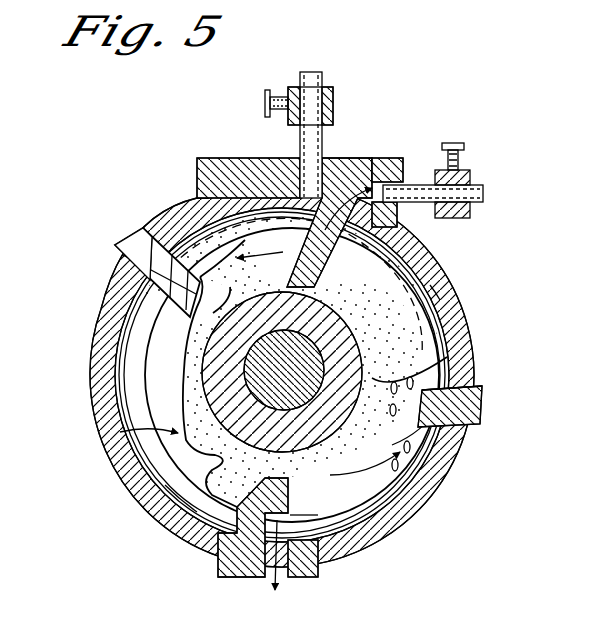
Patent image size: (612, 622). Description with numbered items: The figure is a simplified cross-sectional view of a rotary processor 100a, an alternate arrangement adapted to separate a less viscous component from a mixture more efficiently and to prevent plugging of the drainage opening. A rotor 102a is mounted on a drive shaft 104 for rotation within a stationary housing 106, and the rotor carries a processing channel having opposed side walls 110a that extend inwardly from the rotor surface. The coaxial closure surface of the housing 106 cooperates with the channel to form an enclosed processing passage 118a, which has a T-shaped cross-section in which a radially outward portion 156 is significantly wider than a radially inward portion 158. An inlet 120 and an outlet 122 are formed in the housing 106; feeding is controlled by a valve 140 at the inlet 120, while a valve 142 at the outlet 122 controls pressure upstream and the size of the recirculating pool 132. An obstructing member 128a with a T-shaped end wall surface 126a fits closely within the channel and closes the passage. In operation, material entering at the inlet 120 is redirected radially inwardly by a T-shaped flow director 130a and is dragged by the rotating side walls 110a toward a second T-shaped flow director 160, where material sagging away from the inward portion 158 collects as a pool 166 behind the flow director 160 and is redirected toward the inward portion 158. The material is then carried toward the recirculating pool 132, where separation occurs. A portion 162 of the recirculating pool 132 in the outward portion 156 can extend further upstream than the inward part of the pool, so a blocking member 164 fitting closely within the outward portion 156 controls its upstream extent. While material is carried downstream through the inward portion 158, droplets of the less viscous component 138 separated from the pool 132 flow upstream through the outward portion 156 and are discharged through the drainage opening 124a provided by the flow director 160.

The rotary processor 100a is at (478, 72).
The rotor 102a is at (217, 337).
The drive shaft 104 is at (252, 377).
The housing 106 is at (137, 484).
The side walls 110a is at (166, 320).
The processing passage 118a is at (162, 405).
The inlet 120 is at (262, 158).
The outlet 122 is at (383, 160).
The drainage opening 124a is at (292, 580).
The end wall surface 126a is at (430, 285).
The obstructing member 128a is at (342, 158).
The flow director 130a is at (124, 240).
The recirculating pool 132 is at (430, 362).
The less viscous component 138 is at (398, 465).
The valve 140 is at (332, 96).
The valve 142 is at (470, 216).
The radially outward portion 156 is at (137, 392).
The radially inward portion 158 is at (120, 432).
The flow director 160 is at (218, 572).
The portion of recirculating pool 162 is at (450, 388).
The blocking member 164 is at (470, 410).
The pool 166 is at (190, 510).